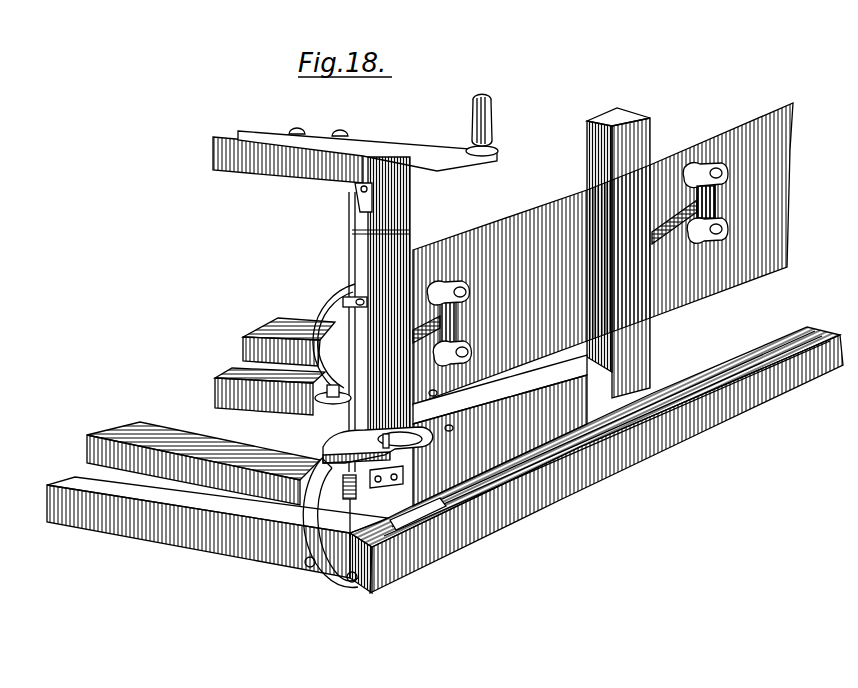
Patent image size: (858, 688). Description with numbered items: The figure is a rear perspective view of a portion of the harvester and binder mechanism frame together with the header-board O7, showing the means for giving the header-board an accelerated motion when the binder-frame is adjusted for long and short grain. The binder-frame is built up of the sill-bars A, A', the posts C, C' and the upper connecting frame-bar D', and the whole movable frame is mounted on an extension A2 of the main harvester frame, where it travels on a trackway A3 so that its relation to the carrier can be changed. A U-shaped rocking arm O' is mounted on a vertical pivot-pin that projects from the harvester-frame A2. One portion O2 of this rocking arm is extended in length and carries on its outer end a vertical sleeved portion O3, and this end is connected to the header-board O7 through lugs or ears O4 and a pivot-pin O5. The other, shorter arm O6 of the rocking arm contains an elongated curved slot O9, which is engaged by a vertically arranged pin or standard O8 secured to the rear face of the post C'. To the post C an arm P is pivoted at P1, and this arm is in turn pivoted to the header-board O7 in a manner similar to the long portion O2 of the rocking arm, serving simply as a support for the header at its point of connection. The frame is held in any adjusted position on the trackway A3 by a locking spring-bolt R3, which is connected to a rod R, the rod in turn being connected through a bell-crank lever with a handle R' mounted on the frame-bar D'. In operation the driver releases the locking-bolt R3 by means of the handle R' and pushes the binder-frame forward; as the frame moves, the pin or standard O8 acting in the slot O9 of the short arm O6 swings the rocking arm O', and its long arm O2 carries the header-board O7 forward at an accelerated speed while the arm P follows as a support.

The frame-bar D' is at (288, 166).
The handle R' is at (378, 132).
The header-board O7 is at (603, 254).
The post C is at (618, 253).
The arm P is at (690, 203).
The pivot of arm P P1 is at (726, 192).
The pivot-pin O5 is at (448, 281).
The lugs or ears O4 is at (466, 289).
The vertical sleeved portion O3 is at (455, 318).
The extended portion of rocking arm O2 is at (464, 360).
The pin or standard O8 is at (441, 391).
The elongated curved slot O9 is at (457, 426).
The rod R is at (341, 332).
The post C' is at (305, 324).
The sill-bar A is at (275, 363).
The sill-bar A' is at (203, 455).
The harvester-frame extension A2 is at (572, 513).
The trackway A3 is at (295, 525).
The arm of rocking arm O6 is at (430, 458).
The U-shaped rocking arm O' is at (312, 413).
The locking spring-bolt R3 is at (338, 512).